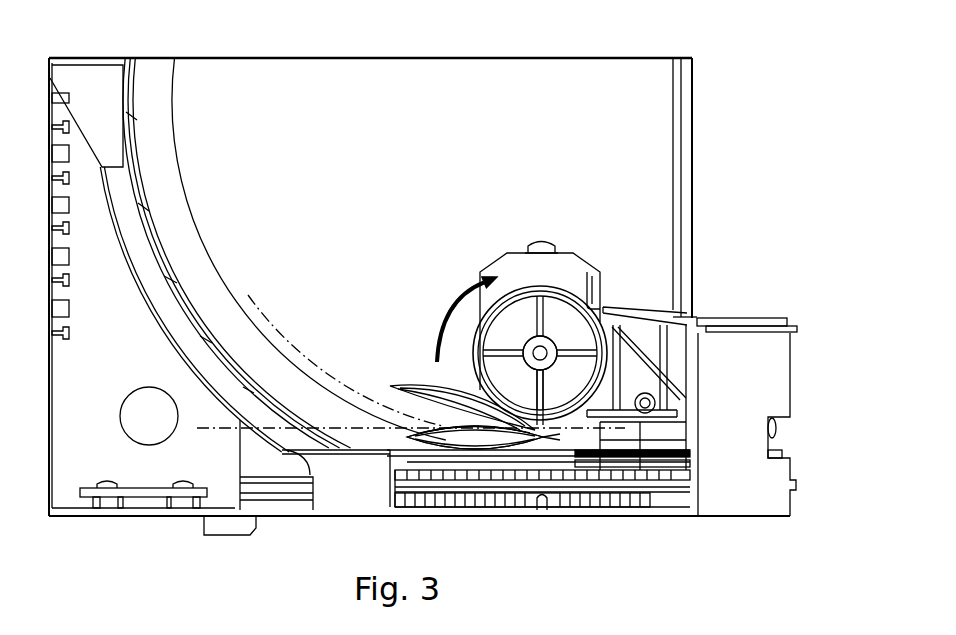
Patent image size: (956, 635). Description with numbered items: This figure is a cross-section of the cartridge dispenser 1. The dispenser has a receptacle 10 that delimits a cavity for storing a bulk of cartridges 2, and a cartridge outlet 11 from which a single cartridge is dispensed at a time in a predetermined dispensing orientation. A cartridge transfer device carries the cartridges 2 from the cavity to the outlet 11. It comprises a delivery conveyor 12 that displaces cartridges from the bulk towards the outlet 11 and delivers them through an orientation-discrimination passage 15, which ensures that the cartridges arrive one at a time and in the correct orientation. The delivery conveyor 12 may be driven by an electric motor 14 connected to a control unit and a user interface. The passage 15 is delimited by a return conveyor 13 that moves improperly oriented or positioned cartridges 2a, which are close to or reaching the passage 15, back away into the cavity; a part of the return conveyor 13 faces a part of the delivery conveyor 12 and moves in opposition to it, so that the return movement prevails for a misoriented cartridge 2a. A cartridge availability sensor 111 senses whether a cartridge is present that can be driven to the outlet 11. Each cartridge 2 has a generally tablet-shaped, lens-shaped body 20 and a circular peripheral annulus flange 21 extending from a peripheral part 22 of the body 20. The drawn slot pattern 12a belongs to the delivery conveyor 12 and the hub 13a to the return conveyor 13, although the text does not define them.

The cartridge dispenser 1 is at (789, 58).
The receptacle 10 is at (127, 107).
The peripheral part 22 is at (395, 388).
The tablet shaped body 20 is at (433, 390).
The cartridges 2 is at (403, 409).
The improperly oriented cartridge 2a is at (403, 359).
The peripheral annulus flange 21 is at (397, 389).
The return conveyor 13 is at (507, 297).
The electric motor 14 is at (532, 262).
The wheel hub 13a is at (493, 407).
The cartridge availability sensor 111 is at (641, 405).
The orientation-discrimination passage 15 is at (563, 447).
The cartridge outlet 11 is at (739, 288).
The delivery conveyor 12 is at (490, 458).
The tray slots 12a is at (500, 453).